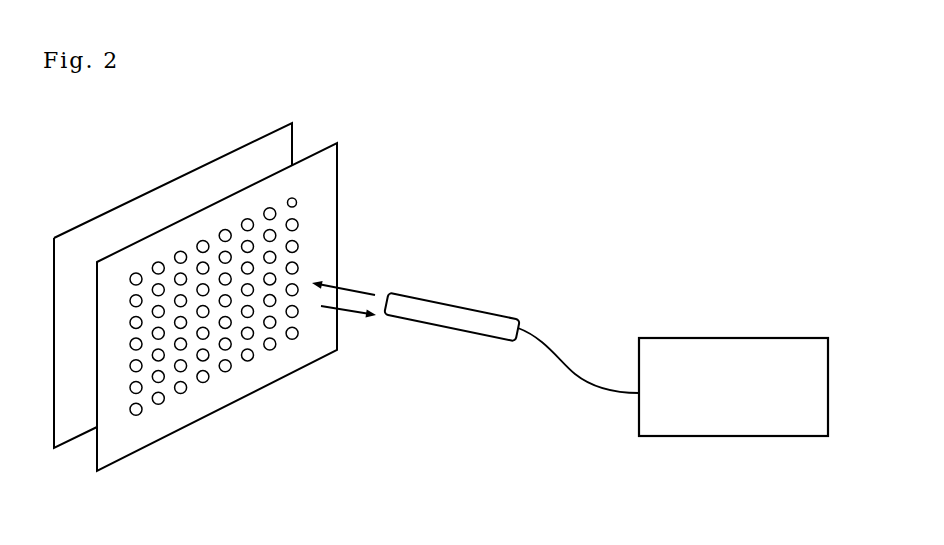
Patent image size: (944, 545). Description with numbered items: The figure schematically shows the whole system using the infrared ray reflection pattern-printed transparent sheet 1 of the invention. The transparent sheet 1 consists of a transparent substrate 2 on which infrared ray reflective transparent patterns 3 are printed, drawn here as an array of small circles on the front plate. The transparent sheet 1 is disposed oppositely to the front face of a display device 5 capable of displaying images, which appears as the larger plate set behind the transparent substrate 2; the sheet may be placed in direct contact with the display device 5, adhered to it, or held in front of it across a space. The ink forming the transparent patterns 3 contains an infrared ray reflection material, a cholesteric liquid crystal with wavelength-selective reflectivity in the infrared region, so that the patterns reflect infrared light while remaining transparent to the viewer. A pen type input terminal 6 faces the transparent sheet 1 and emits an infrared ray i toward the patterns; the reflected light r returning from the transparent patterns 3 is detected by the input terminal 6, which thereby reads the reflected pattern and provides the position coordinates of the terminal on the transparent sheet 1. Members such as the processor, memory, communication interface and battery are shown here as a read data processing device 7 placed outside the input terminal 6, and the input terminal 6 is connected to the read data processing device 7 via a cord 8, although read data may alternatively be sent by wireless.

The infrared ray reflection pattern-printed transparent sheet 1 is at (223, 319).
The transparent substrate 2 is at (120, 437).
The transparent patterns 3 is at (297, 202).
The display device 5 is at (108, 233).
The input terminal 6 is at (448, 302).
The read data processing device 7 is at (718, 338).
The cord 8 is at (572, 371).
The infrared ray i is at (349, 290).
The reflected light r is at (347, 315).